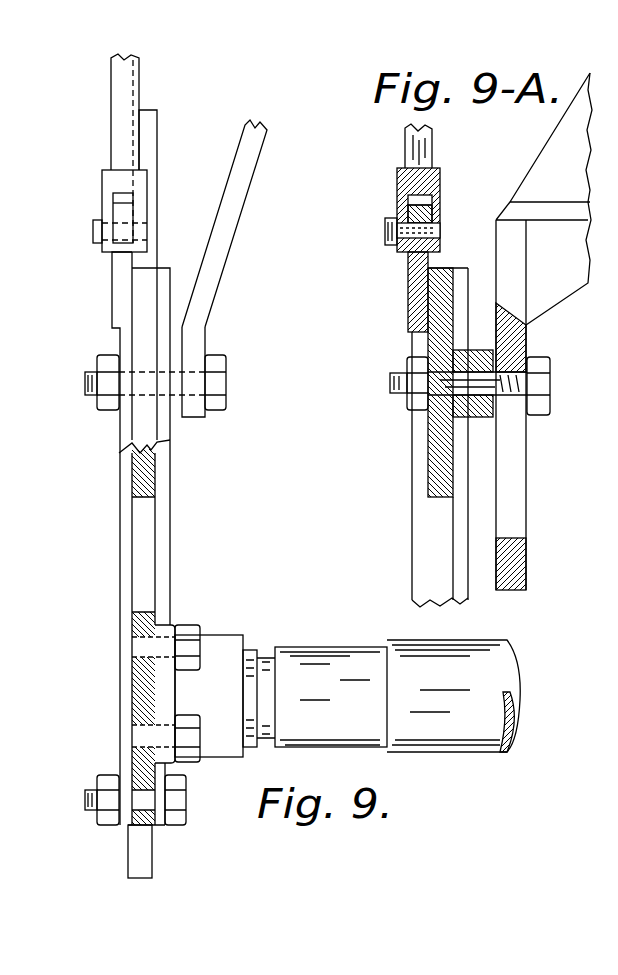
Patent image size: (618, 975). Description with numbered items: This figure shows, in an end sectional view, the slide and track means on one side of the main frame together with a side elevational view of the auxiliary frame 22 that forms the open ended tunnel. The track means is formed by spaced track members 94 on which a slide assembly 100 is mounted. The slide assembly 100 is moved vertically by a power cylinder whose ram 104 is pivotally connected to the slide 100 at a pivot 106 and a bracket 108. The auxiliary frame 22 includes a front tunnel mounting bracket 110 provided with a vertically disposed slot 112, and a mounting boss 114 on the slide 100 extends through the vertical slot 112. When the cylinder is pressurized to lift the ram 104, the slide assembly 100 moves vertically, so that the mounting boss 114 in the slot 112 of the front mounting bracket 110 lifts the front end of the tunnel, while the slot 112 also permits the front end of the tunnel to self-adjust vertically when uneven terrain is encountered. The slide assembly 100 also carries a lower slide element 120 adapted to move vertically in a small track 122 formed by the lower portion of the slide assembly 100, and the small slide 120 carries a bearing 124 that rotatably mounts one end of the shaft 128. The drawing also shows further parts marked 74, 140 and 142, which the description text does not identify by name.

In FIG. 9, the ram 104 is at (122, 80).
In FIG. 9-A, the ram 104 is at (405, 141).
In FIG. 9, the track member 94 is at (152, 133).
In FIG. 9, the pivot 106 is at (95, 232).
In FIG. 9-A, the pivot 106 is at (385, 232).
In FIG. 9, the bracket 108 is at (118, 282).
In FIG. 9, the slide assembly 100 is at (112, 435).
In FIG. 9-A, the slide assembly 100 is at (404, 433).
In FIG. 9, the small track 122 is at (142, 530).
In FIG. 9-A, the small track 122 is at (440, 537).
In FIG. 9, the lower slide element 120 is at (137, 613).
In FIG. 9, the bearing 124 is at (167, 692).
In FIG. 9, the shaft 128 is at (325, 652).
In FIG. 9, the shaft 74 is at (446, 753).
In FIG. 9, the link arm 140 is at (226, 226).
In FIG. 9, the bracket 142 is at (227, 380).
In FIG. 9-A, the auxiliary frame 22 is at (528, 158).
In FIG. 9-A, the mounting boss 114 is at (470, 346).
In FIG. 9-A, the vertical slot 112 is at (510, 471).
In FIG. 9-A, the front tunnel mounting bracket 110 is at (526, 561).